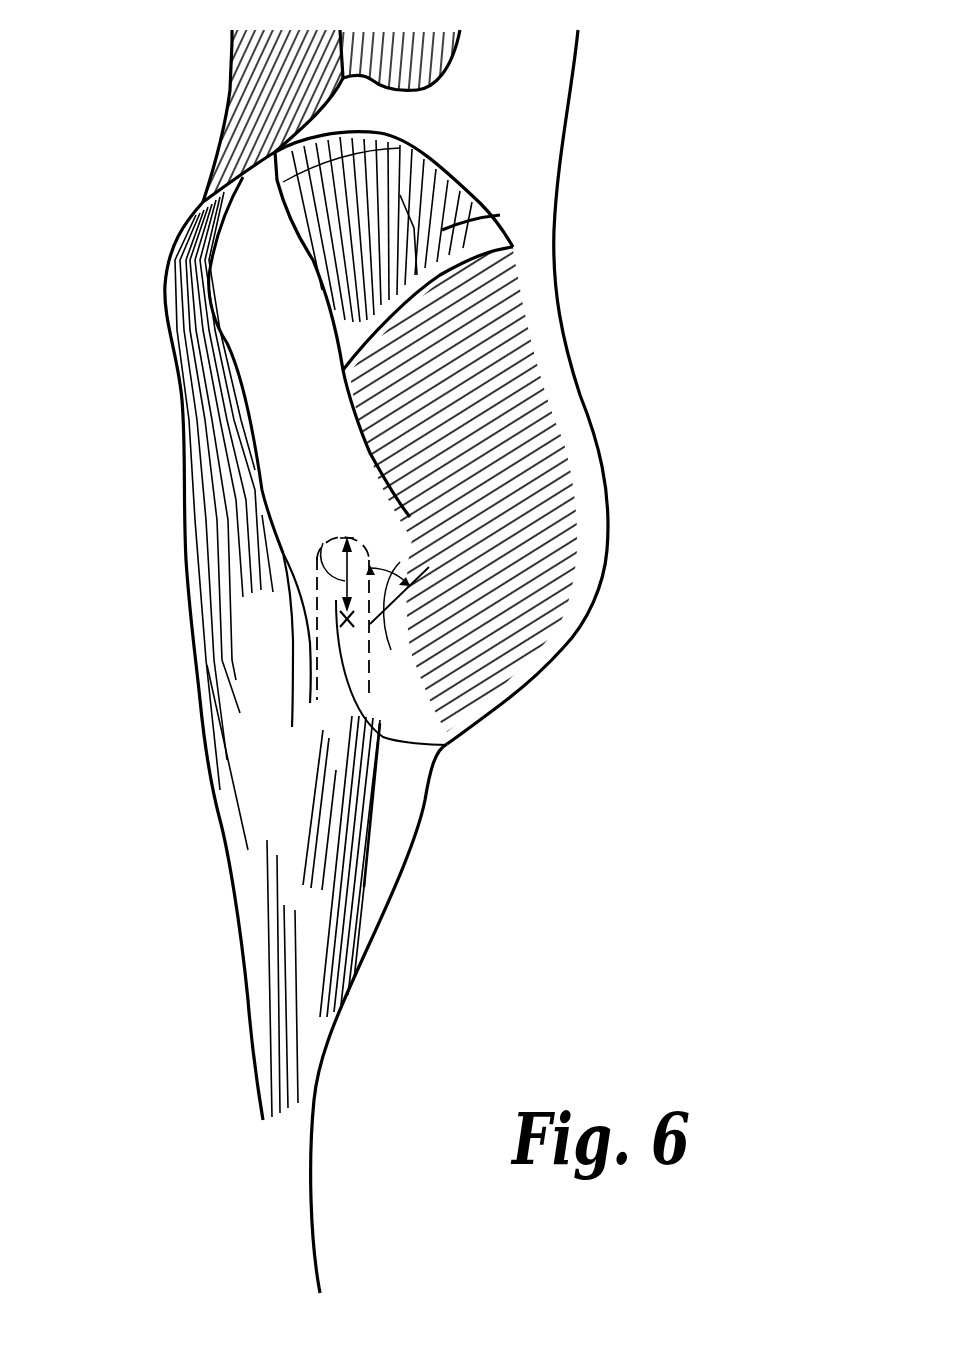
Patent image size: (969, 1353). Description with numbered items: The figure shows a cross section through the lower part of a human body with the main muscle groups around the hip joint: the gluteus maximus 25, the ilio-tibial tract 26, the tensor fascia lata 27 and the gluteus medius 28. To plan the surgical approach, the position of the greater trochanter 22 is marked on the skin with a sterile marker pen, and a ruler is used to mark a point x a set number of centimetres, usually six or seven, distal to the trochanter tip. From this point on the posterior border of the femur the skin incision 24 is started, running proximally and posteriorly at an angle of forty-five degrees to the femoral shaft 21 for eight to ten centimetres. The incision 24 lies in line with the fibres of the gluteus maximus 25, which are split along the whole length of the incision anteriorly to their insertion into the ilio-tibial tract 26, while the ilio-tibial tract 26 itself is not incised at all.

The femoral shaft 21 is at (447, 745).
The greater trochanter 22 is at (349, 515).
The skin incision 24 is at (370, 578).
The gluteus maximus 25 is at (527, 640).
The ilio-tibial tract 26 is at (340, 867).
The tensor fascia lata 27 is at (220, 473).
The gluteus medius 28 is at (500, 215).